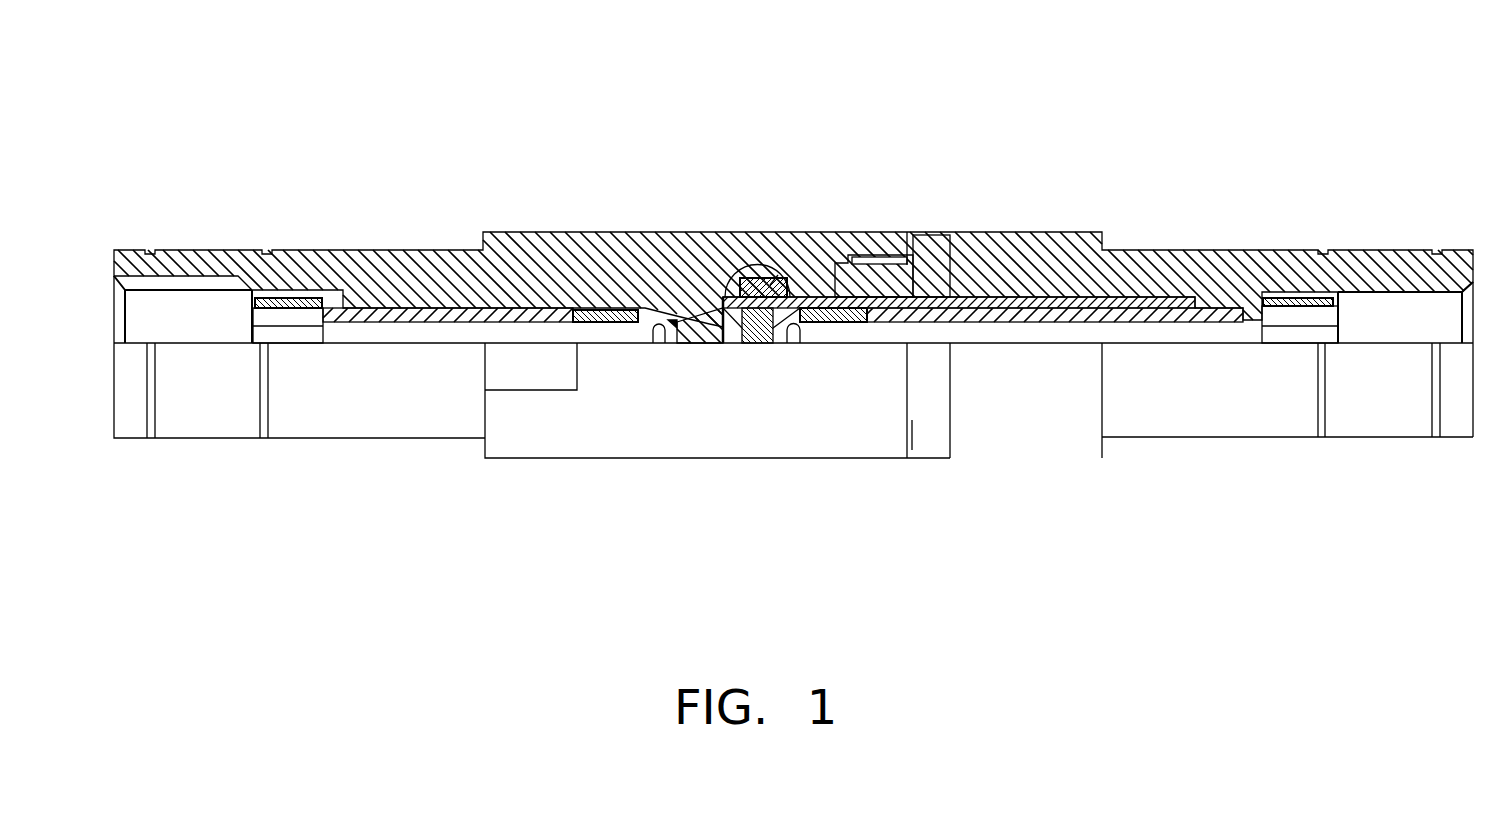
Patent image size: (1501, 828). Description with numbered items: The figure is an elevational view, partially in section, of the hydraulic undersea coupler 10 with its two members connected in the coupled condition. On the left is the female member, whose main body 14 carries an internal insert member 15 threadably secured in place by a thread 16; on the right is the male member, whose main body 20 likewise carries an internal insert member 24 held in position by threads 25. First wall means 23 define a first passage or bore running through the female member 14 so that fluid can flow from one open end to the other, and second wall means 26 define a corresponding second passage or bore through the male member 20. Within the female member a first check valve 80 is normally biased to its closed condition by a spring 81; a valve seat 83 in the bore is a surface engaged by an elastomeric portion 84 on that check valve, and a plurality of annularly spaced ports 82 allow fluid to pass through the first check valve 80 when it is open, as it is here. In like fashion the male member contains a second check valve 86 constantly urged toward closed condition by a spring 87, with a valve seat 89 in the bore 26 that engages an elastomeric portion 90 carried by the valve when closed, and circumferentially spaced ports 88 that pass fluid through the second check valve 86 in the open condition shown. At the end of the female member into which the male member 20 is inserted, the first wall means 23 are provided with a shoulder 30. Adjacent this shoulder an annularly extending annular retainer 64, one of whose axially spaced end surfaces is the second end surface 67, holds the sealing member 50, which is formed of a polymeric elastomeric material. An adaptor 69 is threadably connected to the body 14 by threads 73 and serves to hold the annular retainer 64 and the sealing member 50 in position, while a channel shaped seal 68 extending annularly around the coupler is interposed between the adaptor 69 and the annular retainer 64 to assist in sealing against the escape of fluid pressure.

The hydraulic undersea coupler 10 is at (657, 192).
The female member main body 14 is at (457, 246).
The internal insert member 15 is at (437, 293).
The thread 16 is at (297, 294).
The male member main body 20 is at (1167, 248).
The first wall means 23 is at (387, 323).
The internal insert member 24 is at (1232, 297).
The threads 25 is at (1288, 292).
The second wall means 26 is at (1073, 322).
The shoulder 30 is at (740, 263).
The sealing member 50 is at (800, 275).
The annular retainer 64 is at (853, 343).
The second end surface 67 is at (846, 260).
The channel shaped seal 68 is at (883, 255).
The adaptor 69 is at (935, 255).
The threads 73 is at (930, 247).
The first check valve 80 is at (713, 343).
The spring 81 is at (623, 343).
The annularly spaced ports 82 is at (648, 315).
The valve seat 83 is at (712, 343).
The elastomeric portion 84 is at (708, 300).
The second check valve 86 is at (760, 343).
The spring 87 is at (825, 343).
The circumferentially spaced ports 88 is at (773, 343).
The valve seat 89 is at (745, 343).
The elastomeric portion 90 is at (778, 275).